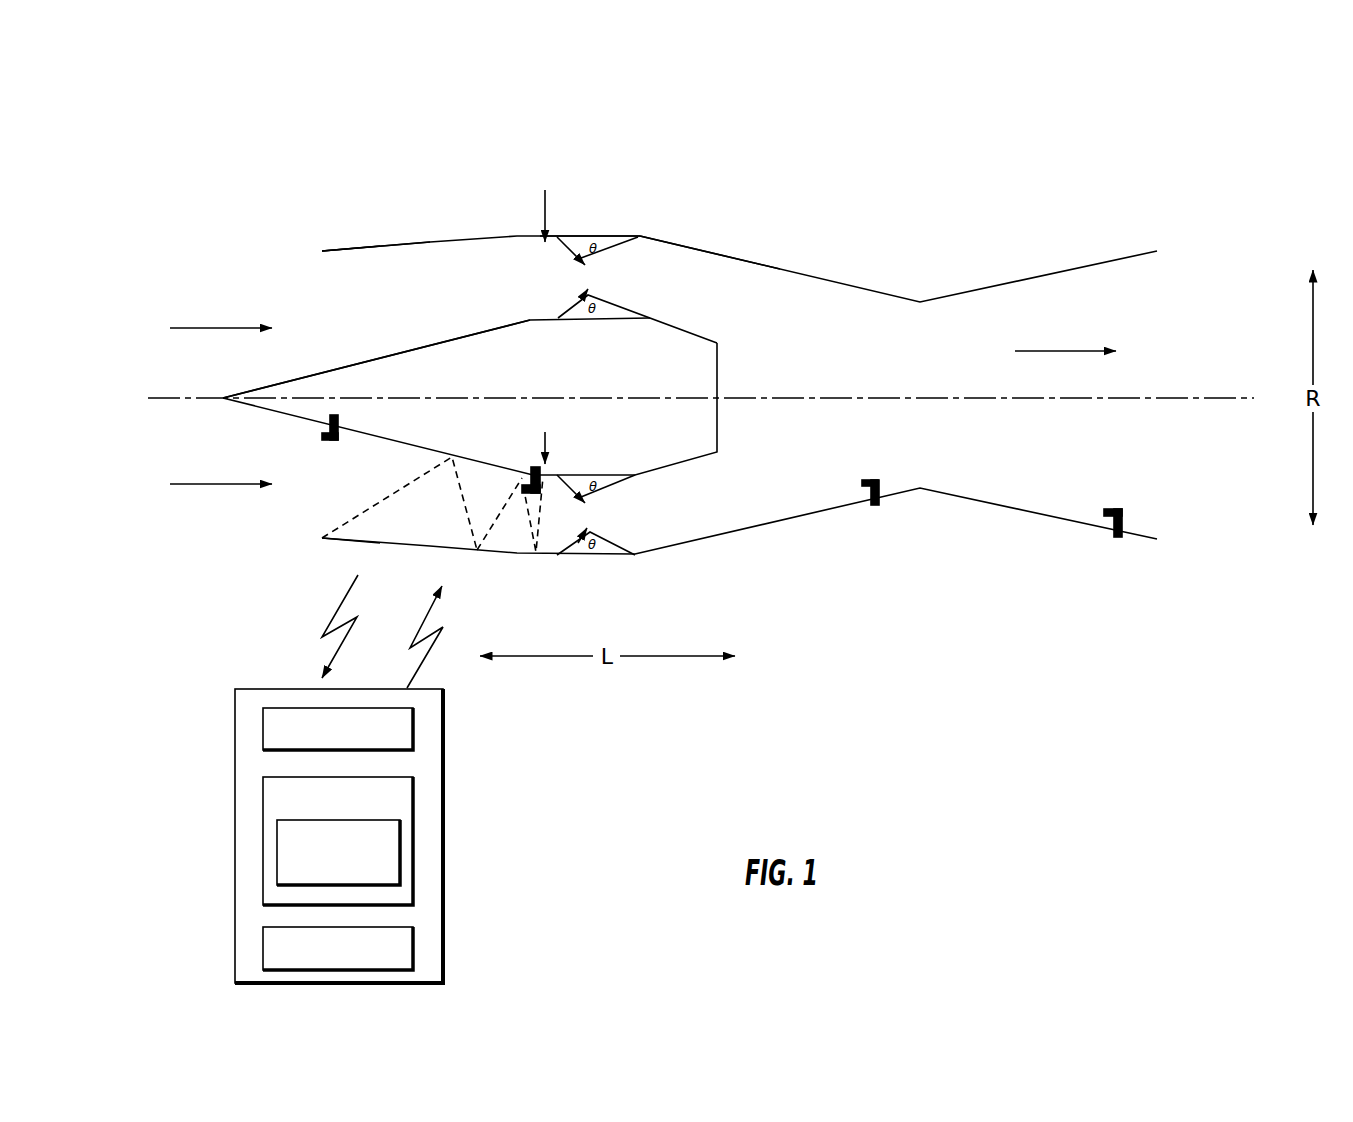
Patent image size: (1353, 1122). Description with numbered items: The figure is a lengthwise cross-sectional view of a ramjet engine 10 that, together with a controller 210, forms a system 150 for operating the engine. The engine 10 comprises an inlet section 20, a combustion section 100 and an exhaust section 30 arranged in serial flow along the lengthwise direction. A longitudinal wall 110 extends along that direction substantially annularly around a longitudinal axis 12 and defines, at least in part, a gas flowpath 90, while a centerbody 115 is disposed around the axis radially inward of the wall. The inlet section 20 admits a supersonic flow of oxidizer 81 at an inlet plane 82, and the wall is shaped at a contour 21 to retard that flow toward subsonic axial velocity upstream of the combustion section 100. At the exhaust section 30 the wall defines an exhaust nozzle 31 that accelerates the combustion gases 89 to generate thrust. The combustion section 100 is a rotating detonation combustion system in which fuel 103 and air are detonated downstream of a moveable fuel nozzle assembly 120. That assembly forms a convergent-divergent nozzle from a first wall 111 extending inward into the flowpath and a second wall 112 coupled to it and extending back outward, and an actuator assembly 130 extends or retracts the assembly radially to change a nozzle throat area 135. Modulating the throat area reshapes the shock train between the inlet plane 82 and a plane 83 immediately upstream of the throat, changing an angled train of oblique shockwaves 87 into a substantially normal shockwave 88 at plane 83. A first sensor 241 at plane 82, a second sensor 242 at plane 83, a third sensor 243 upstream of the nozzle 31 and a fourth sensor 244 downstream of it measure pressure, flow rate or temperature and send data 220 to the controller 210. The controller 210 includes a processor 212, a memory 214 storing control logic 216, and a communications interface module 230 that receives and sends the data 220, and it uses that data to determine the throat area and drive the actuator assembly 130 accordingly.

The ramjet engine 10 is at (730, 152).
The longitudinal axis 12 is at (1190, 398).
The inlet section 20 is at (372, 205).
The contour 21 is at (503, 226).
The exhaust section 30 is at (902, 252).
The exhaust nozzle 31 is at (923, 523).
The flow of oxidizer 81 is at (210, 328).
The inlet plane 82 is at (319, 262).
The plane 83 is at (545, 210).
The angled train of oblique shockwaves 87 is at (383, 502).
The substantially normal shockwave 88 is at (537, 517).
The flow of combustion gases 89 is at (1062, 351).
The gas flowpath 90 is at (446, 299).
The combustion section 100 is at (611, 226).
The flow of fuel 103 is at (581, 258).
The longitudinal wall 110 is at (577, 237).
The first wall 111 is at (565, 243).
The second wall 112 is at (622, 243).
The centerbody 115 is at (524, 324).
The fuel nozzle assembly 120 is at (613, 475).
The actuator assembly 130 is at (590, 546).
The nozzle throat area 135 is at (612, 278).
The system 150 is at (1013, 101).
The controller 210 is at (235, 768).
The processor 212 is at (321, 739).
The memory 214 is at (321, 807).
The control logic 216 is at (321, 864).
The data 220 is at (420, 668).
The communications interface module 230 is at (321, 957).
The first sensor 241 is at (340, 423).
The second sensor 242 is at (530, 472).
The third sensor 243 is at (879, 487).
The fourth sensor 244 is at (1122, 515).